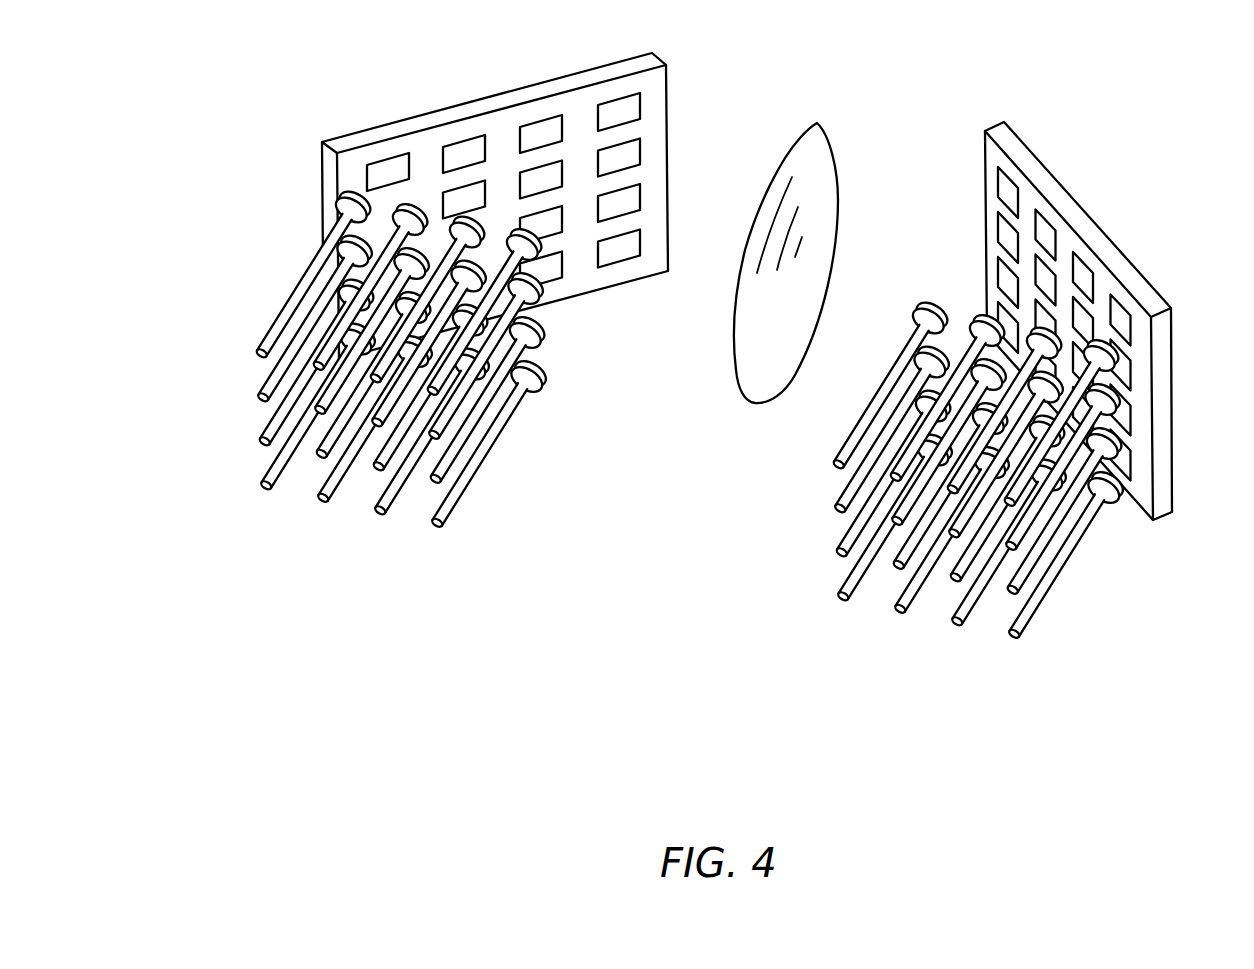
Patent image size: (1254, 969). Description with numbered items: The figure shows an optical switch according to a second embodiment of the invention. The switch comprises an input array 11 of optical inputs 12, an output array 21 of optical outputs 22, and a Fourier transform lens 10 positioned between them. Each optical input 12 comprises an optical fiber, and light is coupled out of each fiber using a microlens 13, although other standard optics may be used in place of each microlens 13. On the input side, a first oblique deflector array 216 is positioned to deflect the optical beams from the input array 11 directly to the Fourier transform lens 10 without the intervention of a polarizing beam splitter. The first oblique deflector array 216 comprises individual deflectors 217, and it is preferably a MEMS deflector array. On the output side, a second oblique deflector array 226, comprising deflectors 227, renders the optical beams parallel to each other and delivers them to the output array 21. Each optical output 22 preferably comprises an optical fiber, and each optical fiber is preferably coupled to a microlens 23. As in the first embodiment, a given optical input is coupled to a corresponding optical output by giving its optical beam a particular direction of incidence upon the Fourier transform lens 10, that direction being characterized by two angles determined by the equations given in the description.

The Fourier transform lens 10 is at (760, 407).
The input array 11 is at (466, 342).
The optical inputs 12 is at (432, 527).
The microlens 13 is at (552, 380).
The first oblique deflector array 216 is at (448, 115).
The deflectors 217 is at (625, 248).
The output array 21 is at (976, 392).
The optical outputs 22 is at (1010, 638).
The microlens 23 is at (1120, 508).
The second oblique deflector array 226 is at (1065, 207).
The deflectors 227 is at (1049, 232).